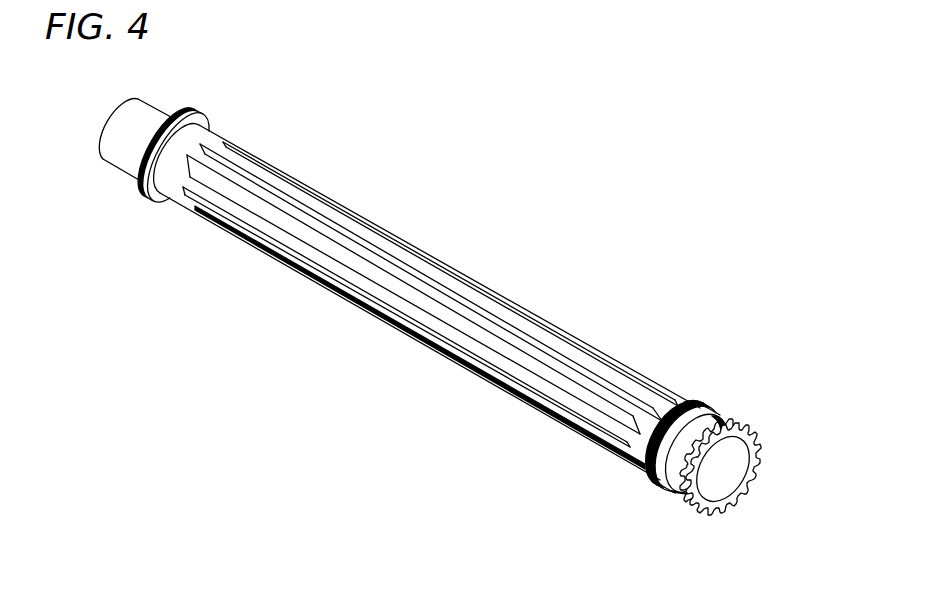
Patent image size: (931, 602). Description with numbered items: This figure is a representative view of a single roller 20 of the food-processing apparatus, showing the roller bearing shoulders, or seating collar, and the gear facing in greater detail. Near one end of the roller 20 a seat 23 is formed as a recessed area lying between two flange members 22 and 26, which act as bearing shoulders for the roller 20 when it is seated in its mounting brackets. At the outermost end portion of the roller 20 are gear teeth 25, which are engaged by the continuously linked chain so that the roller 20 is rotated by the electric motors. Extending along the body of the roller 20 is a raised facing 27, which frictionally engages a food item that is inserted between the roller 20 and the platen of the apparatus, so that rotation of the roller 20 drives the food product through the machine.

The roller 20 is at (192, 143).
The flange member 22 is at (165, 198).
The seat 23 is at (695, 408).
The gear teeth 25 is at (760, 448).
The flange member 26 is at (713, 416).
The raised facing 27 is at (352, 255).